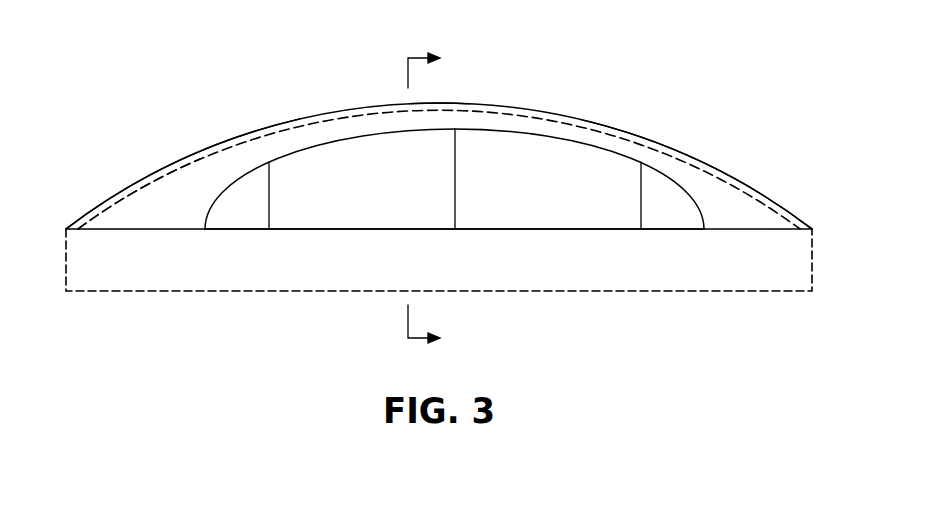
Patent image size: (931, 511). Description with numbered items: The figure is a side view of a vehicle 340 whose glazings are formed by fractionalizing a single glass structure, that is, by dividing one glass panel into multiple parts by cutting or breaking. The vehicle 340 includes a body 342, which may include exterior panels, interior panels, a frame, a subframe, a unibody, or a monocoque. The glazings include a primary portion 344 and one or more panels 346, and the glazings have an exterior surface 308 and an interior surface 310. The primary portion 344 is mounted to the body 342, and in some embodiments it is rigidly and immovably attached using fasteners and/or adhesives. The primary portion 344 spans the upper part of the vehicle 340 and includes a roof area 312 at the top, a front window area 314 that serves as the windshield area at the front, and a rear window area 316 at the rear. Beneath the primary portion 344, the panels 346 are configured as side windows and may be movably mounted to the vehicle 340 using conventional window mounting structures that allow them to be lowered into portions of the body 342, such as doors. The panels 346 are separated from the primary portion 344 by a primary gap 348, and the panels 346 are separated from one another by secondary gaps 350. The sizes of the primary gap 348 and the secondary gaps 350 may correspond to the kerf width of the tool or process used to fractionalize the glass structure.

The vehicle 340 is at (136, 53).
The body 342 is at (136, 292).
The primary portion 344 is at (137, 200).
The panels 346 is at (253, 224).
The primary gap 348 is at (225, 195).
The secondary gaps 350 is at (270, 170).
The exterior surface 308 is at (527, 109).
The interior surface 310 is at (600, 124).
The roof area 312 is at (440, 103).
The front window area 314 is at (197, 152).
The rear window area 316 is at (689, 154).